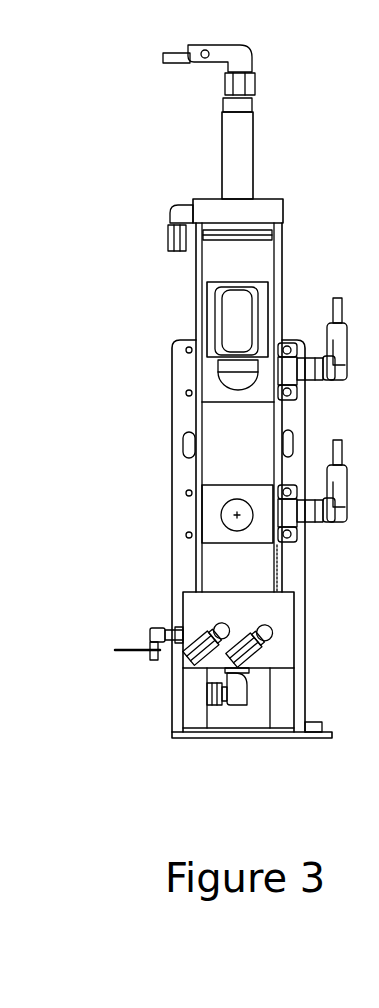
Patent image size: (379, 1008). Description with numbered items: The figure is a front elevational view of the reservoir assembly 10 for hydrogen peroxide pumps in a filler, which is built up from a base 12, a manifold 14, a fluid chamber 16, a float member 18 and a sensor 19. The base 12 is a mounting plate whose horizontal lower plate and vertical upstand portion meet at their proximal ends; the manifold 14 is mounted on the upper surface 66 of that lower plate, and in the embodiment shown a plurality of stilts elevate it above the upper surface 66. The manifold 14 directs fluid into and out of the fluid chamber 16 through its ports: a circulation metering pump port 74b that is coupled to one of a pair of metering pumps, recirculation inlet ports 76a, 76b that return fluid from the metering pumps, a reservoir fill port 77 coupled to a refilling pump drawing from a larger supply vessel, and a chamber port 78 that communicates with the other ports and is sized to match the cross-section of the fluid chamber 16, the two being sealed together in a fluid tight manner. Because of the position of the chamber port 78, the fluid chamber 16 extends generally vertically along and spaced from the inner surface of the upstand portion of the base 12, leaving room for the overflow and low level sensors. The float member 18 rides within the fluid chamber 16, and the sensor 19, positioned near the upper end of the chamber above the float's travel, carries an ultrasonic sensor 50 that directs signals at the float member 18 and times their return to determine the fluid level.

The reservoir assembly 10 is at (213, 382).
The base 12 is at (150, 513).
The manifold 14 is at (306, 641).
The fluid chamber 16 is at (292, 256).
The float member 18 is at (192, 302).
The sensor 19 is at (271, 158).
The ultrasonic sensor 50 is at (273, 82).
The upper surface 66 is at (205, 717).
The circulation metering pump port 74b is at (132, 631).
The recirculation inlet port 76a is at (201, 609).
The recirculation inlet port 76b is at (269, 611).
The reservoir fill port 77 is at (266, 690).
The chamber port 78 is at (291, 570).